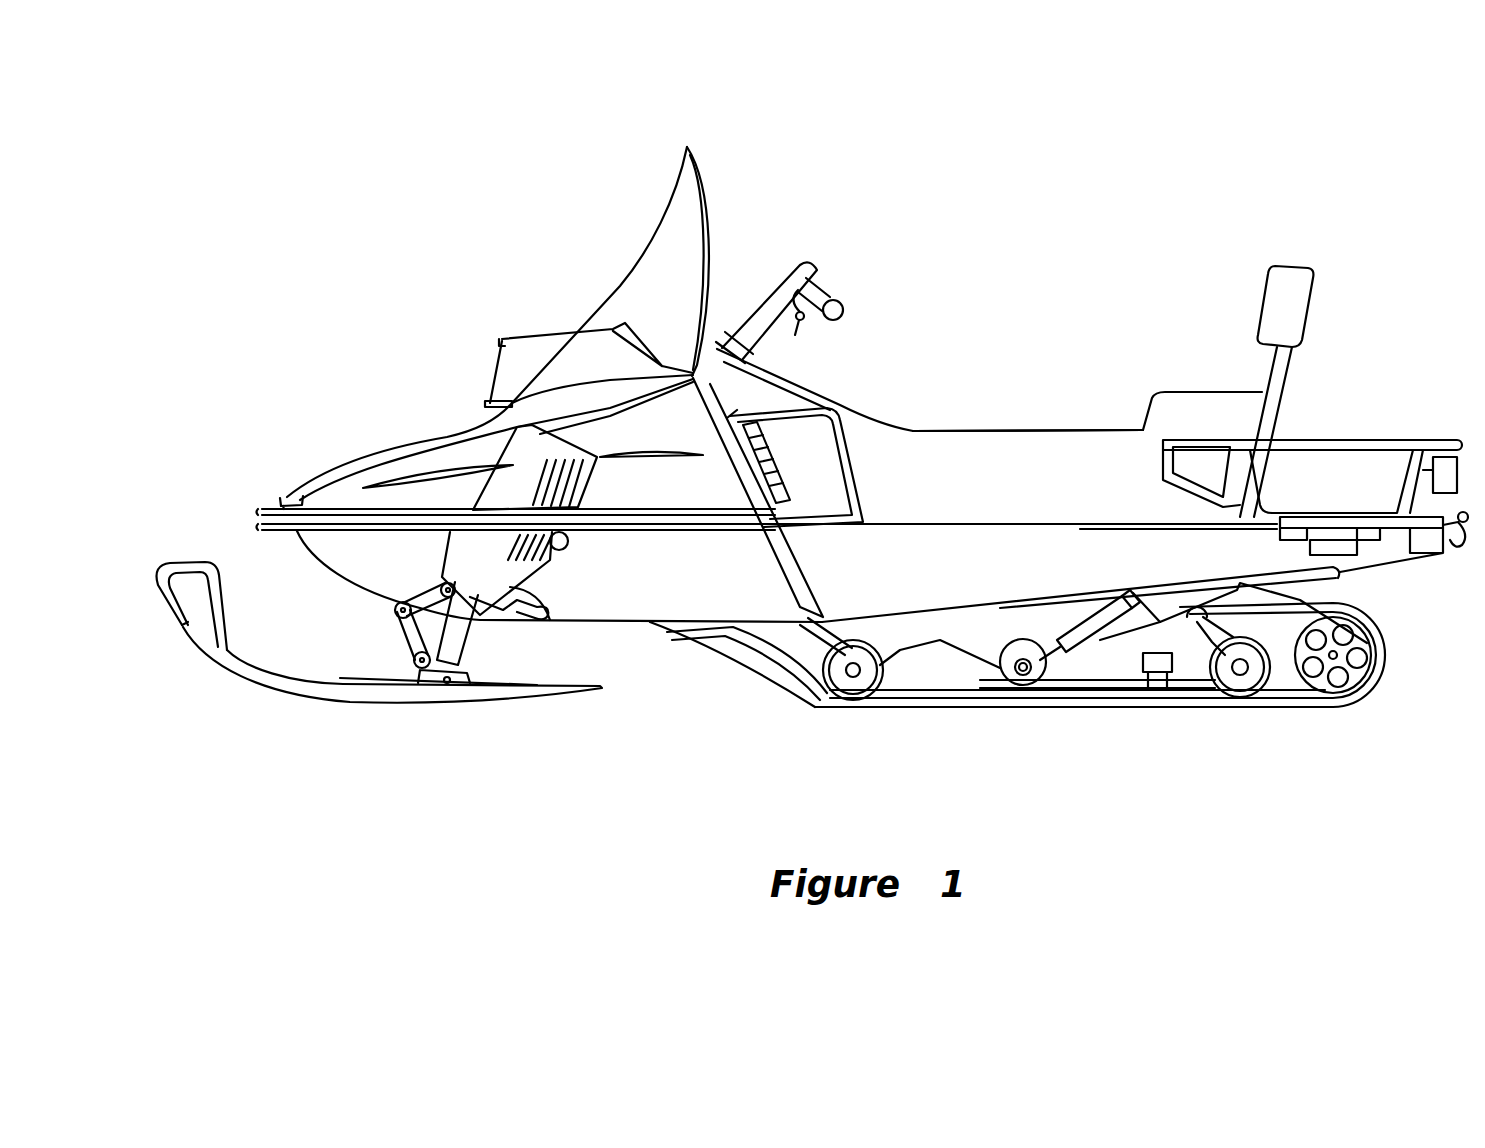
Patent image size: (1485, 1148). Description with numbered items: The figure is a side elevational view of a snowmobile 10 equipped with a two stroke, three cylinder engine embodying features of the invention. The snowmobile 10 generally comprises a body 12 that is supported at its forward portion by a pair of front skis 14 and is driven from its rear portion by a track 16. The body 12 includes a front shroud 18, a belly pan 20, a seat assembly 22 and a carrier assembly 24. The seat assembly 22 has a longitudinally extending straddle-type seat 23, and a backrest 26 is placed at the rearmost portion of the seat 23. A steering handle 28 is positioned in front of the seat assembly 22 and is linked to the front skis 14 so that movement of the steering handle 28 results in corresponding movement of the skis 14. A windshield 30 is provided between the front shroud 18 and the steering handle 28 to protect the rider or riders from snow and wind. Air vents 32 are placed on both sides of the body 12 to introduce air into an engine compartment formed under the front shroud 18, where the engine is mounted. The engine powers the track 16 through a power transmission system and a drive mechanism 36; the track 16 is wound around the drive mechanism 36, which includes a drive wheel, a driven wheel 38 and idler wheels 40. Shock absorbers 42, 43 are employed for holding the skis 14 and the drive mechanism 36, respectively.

The snowmobile 10 is at (1092, 226).
The body 12 is at (888, 415).
The front skis 14 is at (387, 700).
The track 16 is at (1130, 710).
The front shroud 18 is at (420, 440).
The belly pan 20 is at (693, 595).
The seat assembly 22 is at (1126, 404).
The straddle-type seat 23 is at (1038, 428).
The carrier assembly 24 is at (1355, 478).
The backrest 26 is at (1290, 280).
The steering handle 28 is at (825, 292).
The windshield 30 is at (655, 250).
The air vents 32 is at (772, 465).
The drive mechanism 36 is at (944, 712).
The driven wheel 38 is at (1360, 680).
The idler wheels 40 is at (1028, 640).
The shock absorber 42 is at (486, 634).
The shock absorber 43 is at (1089, 612).